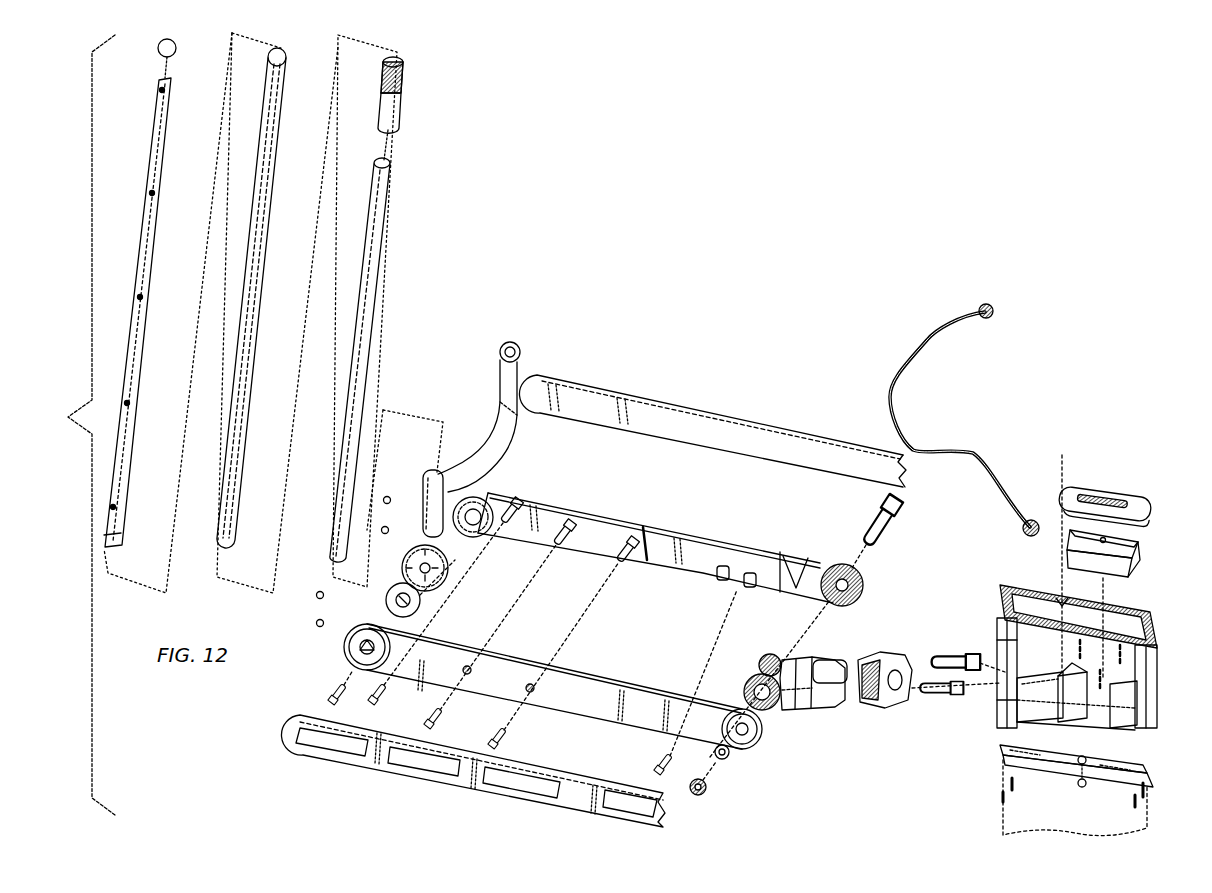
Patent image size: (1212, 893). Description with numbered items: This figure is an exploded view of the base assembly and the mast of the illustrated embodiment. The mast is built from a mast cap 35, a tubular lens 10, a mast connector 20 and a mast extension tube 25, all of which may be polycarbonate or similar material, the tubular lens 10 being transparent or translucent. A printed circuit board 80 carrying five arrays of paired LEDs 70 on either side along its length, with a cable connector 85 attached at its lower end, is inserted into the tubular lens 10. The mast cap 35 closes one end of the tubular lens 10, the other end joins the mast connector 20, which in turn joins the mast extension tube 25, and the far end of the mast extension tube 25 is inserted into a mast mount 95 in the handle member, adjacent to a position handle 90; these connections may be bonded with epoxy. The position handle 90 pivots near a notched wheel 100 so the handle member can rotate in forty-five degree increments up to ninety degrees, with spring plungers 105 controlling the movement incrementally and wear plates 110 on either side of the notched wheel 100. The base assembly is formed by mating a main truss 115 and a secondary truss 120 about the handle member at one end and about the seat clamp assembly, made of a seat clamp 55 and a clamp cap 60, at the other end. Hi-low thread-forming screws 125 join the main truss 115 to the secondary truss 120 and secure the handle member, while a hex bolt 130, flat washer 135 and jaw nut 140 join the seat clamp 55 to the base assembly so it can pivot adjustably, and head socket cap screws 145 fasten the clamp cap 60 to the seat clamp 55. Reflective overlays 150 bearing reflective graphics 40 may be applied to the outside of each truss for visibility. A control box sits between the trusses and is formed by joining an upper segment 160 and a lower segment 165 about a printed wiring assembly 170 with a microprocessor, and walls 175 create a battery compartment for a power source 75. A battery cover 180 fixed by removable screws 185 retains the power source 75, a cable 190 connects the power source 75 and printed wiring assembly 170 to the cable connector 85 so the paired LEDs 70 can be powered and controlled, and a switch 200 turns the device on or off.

The tubular lens 10 is at (281, 138).
The mast connector 20 is at (403, 100).
The mast extension tube 25 is at (382, 252).
The mast cap 35 is at (177, 48).
The reflective graphics 40 is at (632, 825).
The seat clamp 55 is at (815, 710).
The clamp cap 60 is at (880, 708).
The paired LEDs 70 is at (165, 90).
The power source 75 is at (1142, 560).
The printed circuit board 80 is at (157, 100).
The cable connector 85 is at (107, 527).
The position handle 90 is at (520, 350).
The mast mount 95 is at (432, 447).
The notched wheel 100 is at (412, 553).
The spring plungers 105 is at (389, 528).
The wear plates 110 is at (458, 570).
The main truss 115 is at (598, 533).
The secondary truss 120 is at (590, 703).
The hi-low thread-forming screws 125 is at (330, 695).
The hex bolt 130 is at (900, 506).
The flat washer 135 is at (732, 758).
The jaw nut 140 is at (704, 796).
The head socket cap screws 145 is at (960, 655).
The reflective overlays 150 is at (690, 420).
The upper segment 160 is at (1005, 587).
The lower segment 165 is at (1037, 772).
The printed wiring assembly 170 is at (1040, 690).
The walls 175 is at (1065, 665).
The battery cover 180 is at (1110, 485).
The removable screws 185 is at (1062, 455).
The cable 190 is at (970, 447).
The switch 200 is at (1082, 788).